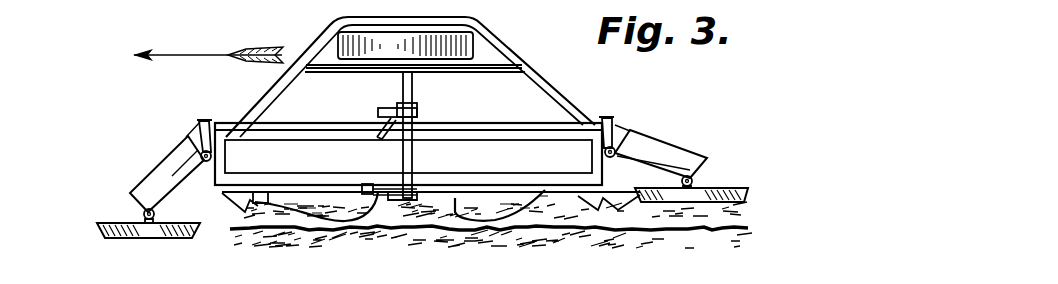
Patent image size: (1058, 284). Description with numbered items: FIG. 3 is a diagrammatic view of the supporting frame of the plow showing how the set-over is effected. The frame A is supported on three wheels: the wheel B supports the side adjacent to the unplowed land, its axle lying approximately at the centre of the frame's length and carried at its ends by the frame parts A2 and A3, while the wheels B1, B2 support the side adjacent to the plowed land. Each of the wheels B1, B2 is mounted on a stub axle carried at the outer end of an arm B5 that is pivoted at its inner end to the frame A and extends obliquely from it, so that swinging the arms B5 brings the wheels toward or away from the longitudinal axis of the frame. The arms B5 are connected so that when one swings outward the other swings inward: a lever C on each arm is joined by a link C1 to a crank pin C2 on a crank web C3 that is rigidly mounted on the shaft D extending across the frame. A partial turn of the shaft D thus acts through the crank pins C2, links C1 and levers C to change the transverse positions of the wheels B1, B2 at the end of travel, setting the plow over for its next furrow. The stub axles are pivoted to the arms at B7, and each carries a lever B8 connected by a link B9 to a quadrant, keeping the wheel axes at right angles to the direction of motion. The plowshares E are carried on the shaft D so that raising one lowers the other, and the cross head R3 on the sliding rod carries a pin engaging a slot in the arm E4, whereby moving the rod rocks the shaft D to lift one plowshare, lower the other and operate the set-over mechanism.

The frame A is at (545, 83).
The frame part A2 is at (352, 24).
The frame part A3 is at (496, 68).
The wheel B is at (470, 35).
The wheel B1 is at (663, 197).
The wheel B2 is at (130, 232).
The arm B5 is at (190, 163).
The stub axle pivot B7 is at (153, 224).
The lever B8 is at (142, 210).
The link B9 is at (158, 163).
The lever C is at (200, 133).
The link C1 is at (277, 120).
The crank pin C2 is at (387, 127).
The crank web C3 is at (415, 110).
The shaft D is at (413, 153).
The plowshare E is at (342, 208).
The arm E4 is at (385, 195).
The cross head R3 is at (363, 188).